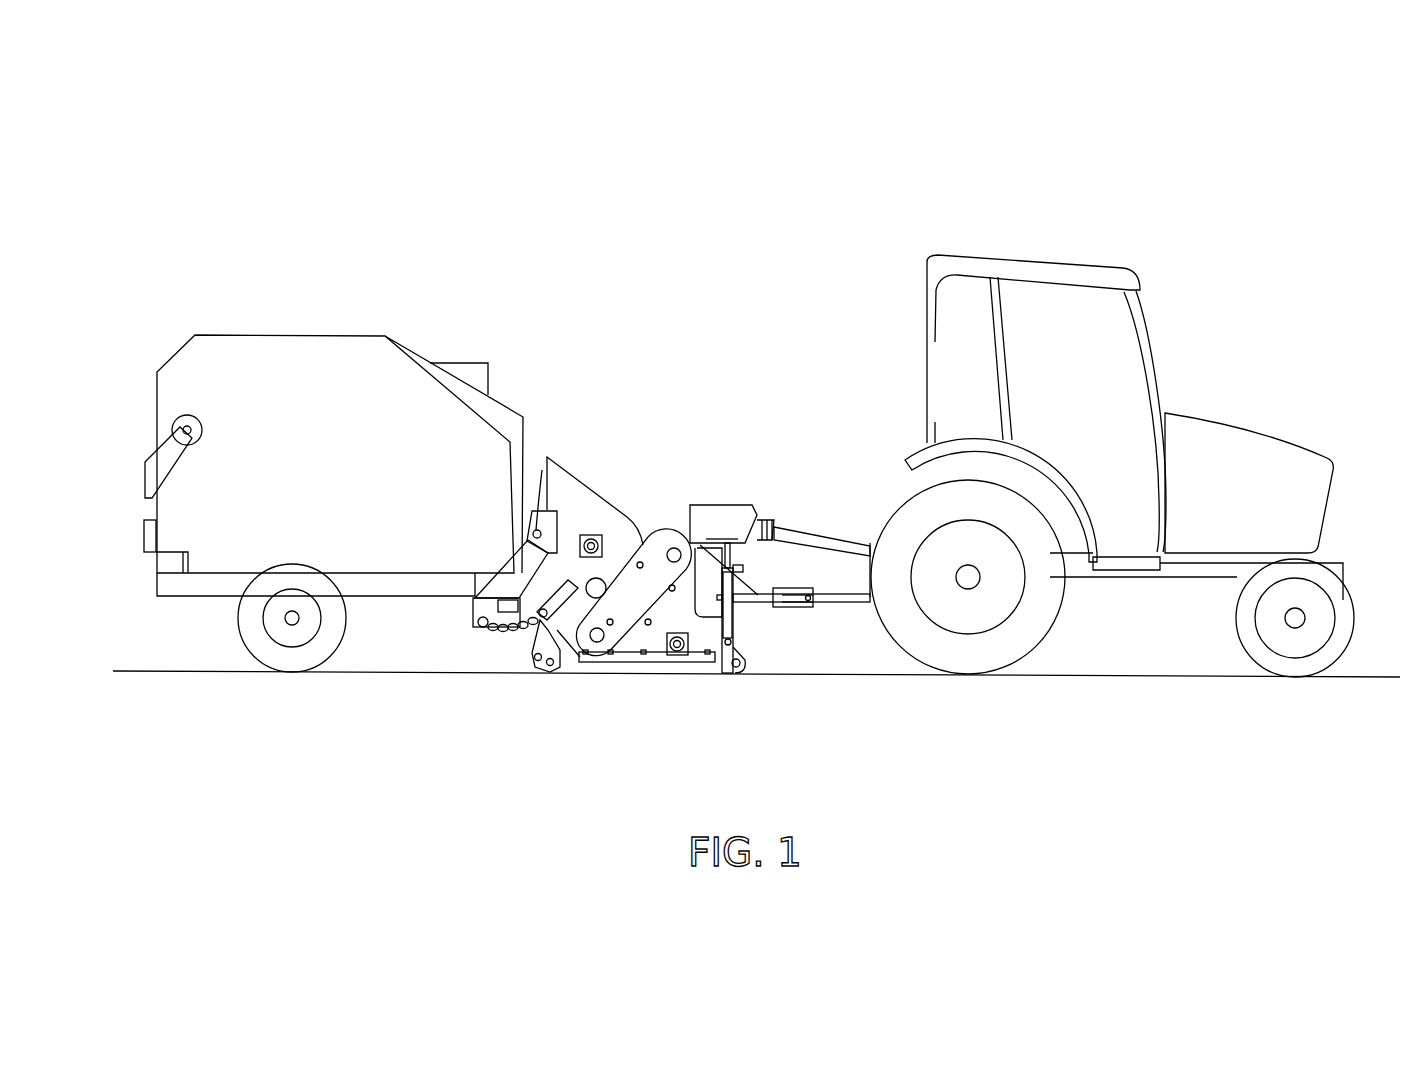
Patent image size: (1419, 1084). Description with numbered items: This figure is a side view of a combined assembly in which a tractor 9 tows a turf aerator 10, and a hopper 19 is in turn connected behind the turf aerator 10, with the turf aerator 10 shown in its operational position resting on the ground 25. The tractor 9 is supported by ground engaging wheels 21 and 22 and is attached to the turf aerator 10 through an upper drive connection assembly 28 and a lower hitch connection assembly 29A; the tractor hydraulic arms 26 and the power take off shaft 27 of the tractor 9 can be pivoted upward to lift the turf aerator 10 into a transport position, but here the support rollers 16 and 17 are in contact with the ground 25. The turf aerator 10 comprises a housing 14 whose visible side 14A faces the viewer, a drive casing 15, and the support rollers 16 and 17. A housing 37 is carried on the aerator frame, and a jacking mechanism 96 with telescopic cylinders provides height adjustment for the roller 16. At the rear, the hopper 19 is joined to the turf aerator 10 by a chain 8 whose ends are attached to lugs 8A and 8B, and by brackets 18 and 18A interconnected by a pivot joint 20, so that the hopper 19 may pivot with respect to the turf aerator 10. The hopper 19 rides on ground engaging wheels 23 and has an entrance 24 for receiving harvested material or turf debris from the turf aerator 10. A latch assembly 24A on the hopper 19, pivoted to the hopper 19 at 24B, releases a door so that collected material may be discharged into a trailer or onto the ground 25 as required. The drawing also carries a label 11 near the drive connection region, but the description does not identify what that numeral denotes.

The chain 8 is at (517, 633).
The lug 8A is at (542, 617).
The lug 8B is at (473, 608).
The tractor 9 is at (1215, 308).
The turf aerator 10 is at (612, 457).
The power take-off connector 11 is at (777, 507).
The housing 14 is at (630, 507).
The side of housing 14A is at (555, 483).
The drive casing 15 is at (623, 612).
The support roller 16 is at (733, 658).
The support roller 17 is at (553, 673).
The bracket 18 is at (511, 572).
The bracket 18A is at (514, 574).
The hopper 19 is at (309, 461).
The pivot joint 20 is at (542, 470).
The ground engaging wheel 21 is at (1317, 664).
The ground engaging wheel 22 is at (1022, 640).
The ground engaging wheels 23 is at (282, 656).
The entrance 24 is at (452, 367).
The latch assembly 24A is at (158, 472).
The pivot 24B is at (197, 424).
The ground 25 is at (1165, 675).
The tractor hydraulic arms 26 is at (853, 596).
The power take off shaft 27 is at (869, 541).
The upper drive connection assembly 28 is at (822, 530).
The lower hitch connection assembly 29A is at (811, 612).
The housing 37 is at (723, 524).
The jacking mechanism 96 is at (742, 613).